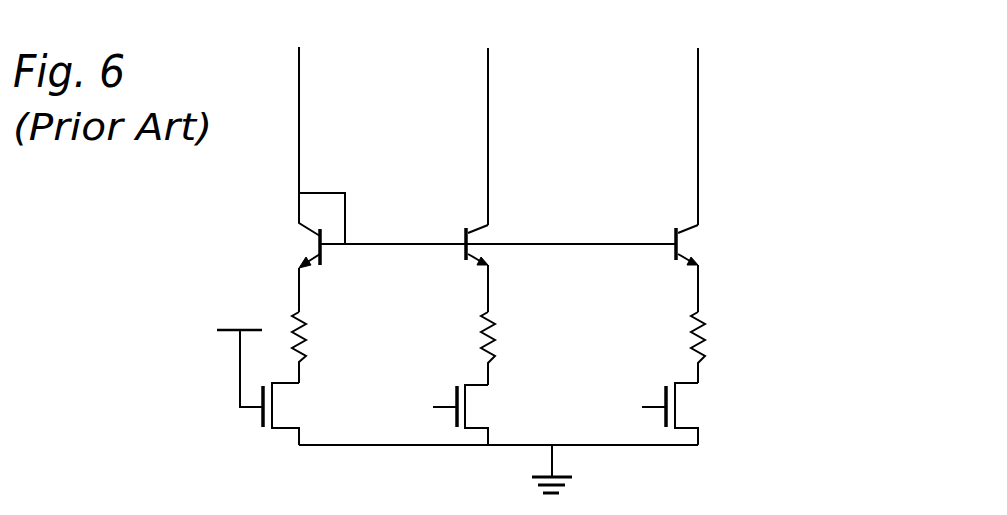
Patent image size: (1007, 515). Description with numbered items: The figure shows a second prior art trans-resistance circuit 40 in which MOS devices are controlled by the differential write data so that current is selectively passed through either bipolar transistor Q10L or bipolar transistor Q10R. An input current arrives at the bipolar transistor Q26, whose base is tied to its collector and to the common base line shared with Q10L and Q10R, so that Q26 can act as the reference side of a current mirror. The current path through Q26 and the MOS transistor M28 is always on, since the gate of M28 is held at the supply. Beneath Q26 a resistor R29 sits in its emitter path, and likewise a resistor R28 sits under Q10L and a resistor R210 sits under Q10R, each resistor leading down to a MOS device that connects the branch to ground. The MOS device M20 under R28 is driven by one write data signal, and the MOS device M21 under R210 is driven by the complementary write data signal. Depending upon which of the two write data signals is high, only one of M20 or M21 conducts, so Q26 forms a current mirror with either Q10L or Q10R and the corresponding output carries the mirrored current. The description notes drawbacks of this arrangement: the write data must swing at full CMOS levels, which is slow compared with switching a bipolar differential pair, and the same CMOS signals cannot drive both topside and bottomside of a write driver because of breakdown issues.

The prior art trans-resistance circuit 40 is at (814, 70).
The bipolar transistor Q26 is at (303, 252).
The bipolar transistor Q10L is at (510, 258).
The bipolar transistor Q10R is at (719, 258).
The resistor R29 is at (323, 347).
The resistor R28 is at (513, 348).
The resistor R210 is at (733, 347).
The MOS transistor M28 is at (277, 372).
The MOS device M20 is at (461, 413).
The MOS device M21 is at (668, 413).